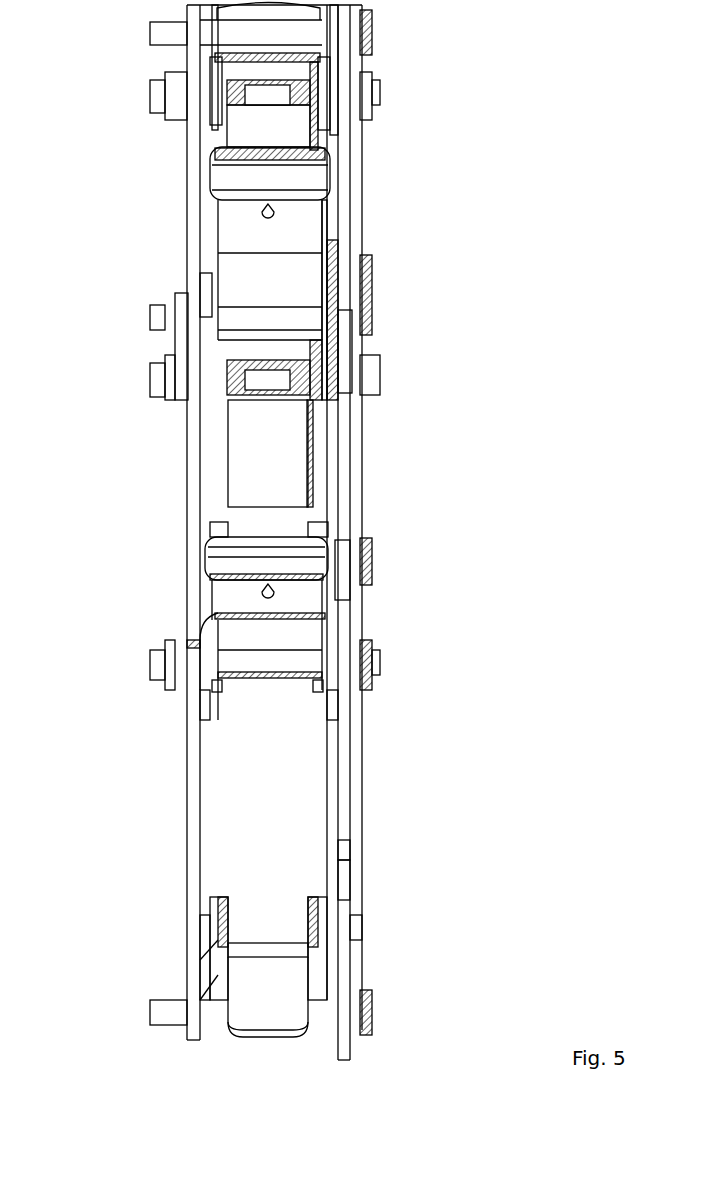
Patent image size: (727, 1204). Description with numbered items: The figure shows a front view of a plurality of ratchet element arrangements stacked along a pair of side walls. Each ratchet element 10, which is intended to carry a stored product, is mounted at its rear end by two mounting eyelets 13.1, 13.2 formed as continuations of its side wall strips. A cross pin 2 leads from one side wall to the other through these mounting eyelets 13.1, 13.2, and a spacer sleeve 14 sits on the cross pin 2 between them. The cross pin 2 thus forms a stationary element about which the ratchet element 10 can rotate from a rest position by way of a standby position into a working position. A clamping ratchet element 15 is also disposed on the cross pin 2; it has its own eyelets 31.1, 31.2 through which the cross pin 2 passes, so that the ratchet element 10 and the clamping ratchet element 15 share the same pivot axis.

The ratchet element 10 is at (312, 215).
The spacer sleeve 14 is at (345, 358).
The cross pin 2 is at (383, 378).
The second mounting eyelet 13.2 is at (332, 387).
The second eyelet of the clamping ratchet element 31.2 is at (340, 393).
The clamping ratchet element 15 is at (312, 483).
The first mounting eyelet 13.1 is at (205, 373).
The first eyelet of the clamping ratchet element 31.1 is at (217, 398).